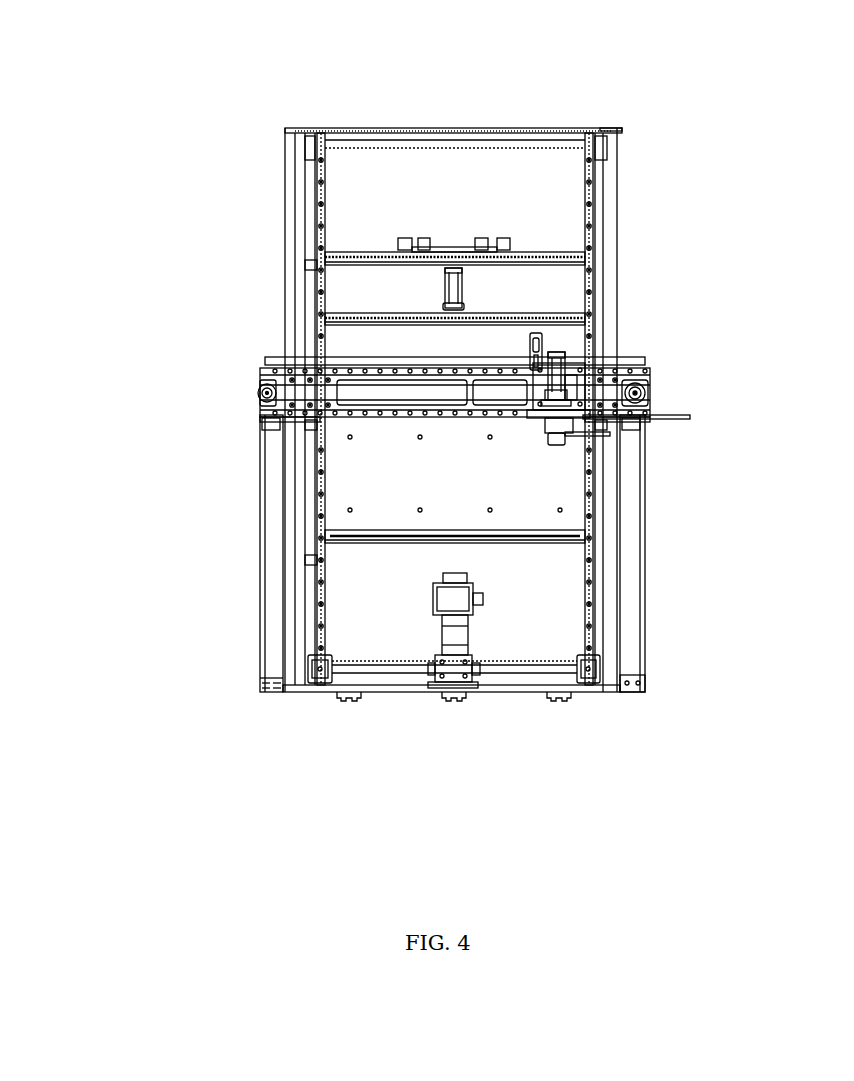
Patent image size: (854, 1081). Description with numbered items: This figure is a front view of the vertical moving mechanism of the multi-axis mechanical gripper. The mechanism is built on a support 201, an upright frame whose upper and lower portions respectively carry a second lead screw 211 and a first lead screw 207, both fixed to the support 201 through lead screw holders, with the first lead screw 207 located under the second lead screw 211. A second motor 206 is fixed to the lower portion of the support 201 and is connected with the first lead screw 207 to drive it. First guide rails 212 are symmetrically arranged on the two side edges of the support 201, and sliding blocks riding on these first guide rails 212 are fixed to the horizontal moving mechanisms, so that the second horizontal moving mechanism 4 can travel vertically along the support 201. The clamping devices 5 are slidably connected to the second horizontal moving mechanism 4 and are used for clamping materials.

The support 201 is at (258, 517).
The second lead screw 211 is at (505, 142).
The first guide rails 212 is at (588, 217).
The second horizontal moving mechanism 4 is at (327, 395).
The clamping devices 5 is at (563, 383).
The second motor 206 is at (457, 618).
The first lead screw 207 is at (380, 668).